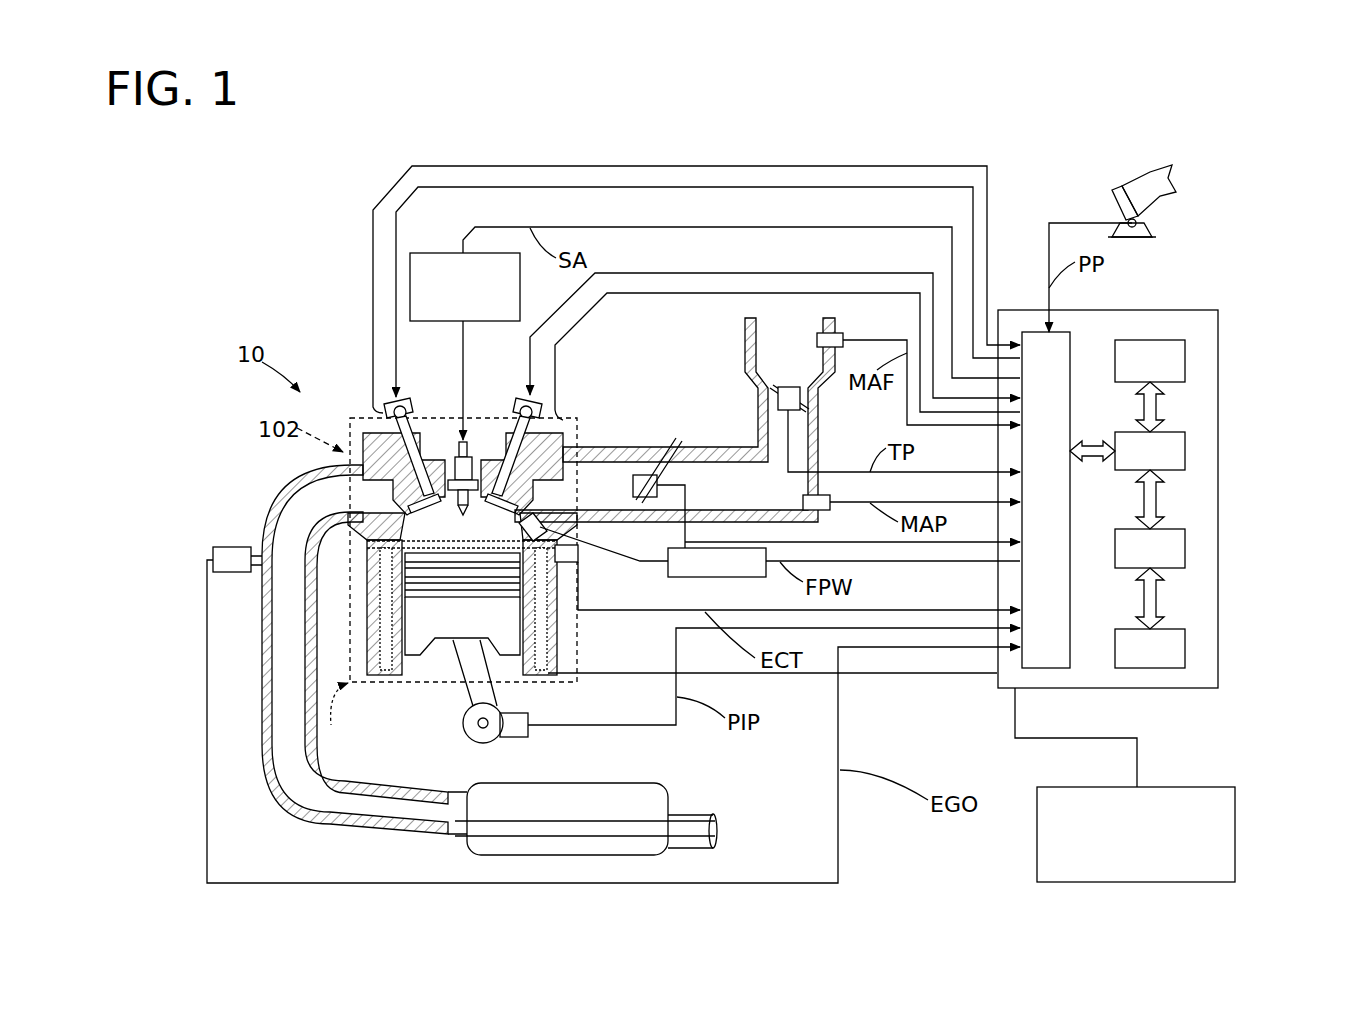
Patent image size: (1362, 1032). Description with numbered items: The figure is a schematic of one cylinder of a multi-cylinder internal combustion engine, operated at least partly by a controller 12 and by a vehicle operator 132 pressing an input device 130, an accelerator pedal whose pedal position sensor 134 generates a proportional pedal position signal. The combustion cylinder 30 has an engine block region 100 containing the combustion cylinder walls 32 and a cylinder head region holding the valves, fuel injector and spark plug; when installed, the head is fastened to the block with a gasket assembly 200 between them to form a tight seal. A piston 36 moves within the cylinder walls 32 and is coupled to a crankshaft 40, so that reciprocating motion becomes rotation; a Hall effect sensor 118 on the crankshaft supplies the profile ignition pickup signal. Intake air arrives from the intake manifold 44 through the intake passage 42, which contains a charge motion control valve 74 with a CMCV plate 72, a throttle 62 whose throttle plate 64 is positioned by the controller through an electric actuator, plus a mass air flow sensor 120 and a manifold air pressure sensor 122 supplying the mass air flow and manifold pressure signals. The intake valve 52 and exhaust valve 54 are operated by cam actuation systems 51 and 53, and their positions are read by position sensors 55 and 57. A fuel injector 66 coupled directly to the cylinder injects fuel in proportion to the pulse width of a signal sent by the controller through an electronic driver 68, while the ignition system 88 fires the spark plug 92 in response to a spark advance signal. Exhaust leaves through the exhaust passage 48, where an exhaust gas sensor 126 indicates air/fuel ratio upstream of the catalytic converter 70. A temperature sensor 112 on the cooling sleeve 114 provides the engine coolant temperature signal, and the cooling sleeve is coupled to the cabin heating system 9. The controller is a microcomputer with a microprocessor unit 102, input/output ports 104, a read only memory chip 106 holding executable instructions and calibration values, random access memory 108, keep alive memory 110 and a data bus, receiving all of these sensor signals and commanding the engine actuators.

The cabin heating system 9 is at (1238, 790).
The controller 12 is at (1152, 485).
The combustion cylinder 30 is at (451, 550).
The combustion cylinder walls 32 is at (403, 670).
The piston 36 is at (447, 660).
The crankshaft 40 is at (470, 745).
The intake passage 42 is at (800, 364).
The intake manifold 44 is at (740, 496).
The exhaust passage 48 is at (348, 507).
The cam actuation system 51 is at (522, 400).
The intake valve 52 is at (510, 505).
The cam actuation system 53 is at (405, 400).
The exhaust valve 54 is at (360, 458).
The position sensor 55 is at (560, 426).
The position sensor 57 is at (376, 420).
The throttle 62 is at (808, 402).
The throttle plate 64 is at (770, 398).
The fuel injector 66 is at (537, 540).
The electronic driver 68 is at (688, 578).
The catalytic converter 70 is at (635, 785).
The CMCV plate 72 is at (636, 475).
The charge motion control valve 74 is at (655, 475).
The ignition system 88 is at (715, 330).
The spark plug 92 is at (470, 440).
The engine block region 100 is at (344, 719).
The microprocessor unit 102 is at (1187, 451).
The input/output ports 104 is at (1072, 342).
The read only memory chip 106 is at (1187, 362).
The random access memory 108 is at (1187, 549).
The keep alive memory 110 is at (1187, 649).
The temperature sensor 112 is at (575, 560).
The cooling sleeve 114 is at (548, 630).
The Hall effect sensor 118 is at (522, 740).
The mass air flow sensor 120 is at (840, 333).
The manifold air pressure sensor 122 is at (822, 510).
The exhaust gas sensor 126 is at (207, 556).
The input device 130 is at (1167, 241).
The vehicle operator 132 is at (1170, 186).
The pedal position sensor 134 is at (1150, 225).
The gasket assembly 200 is at (335, 540).